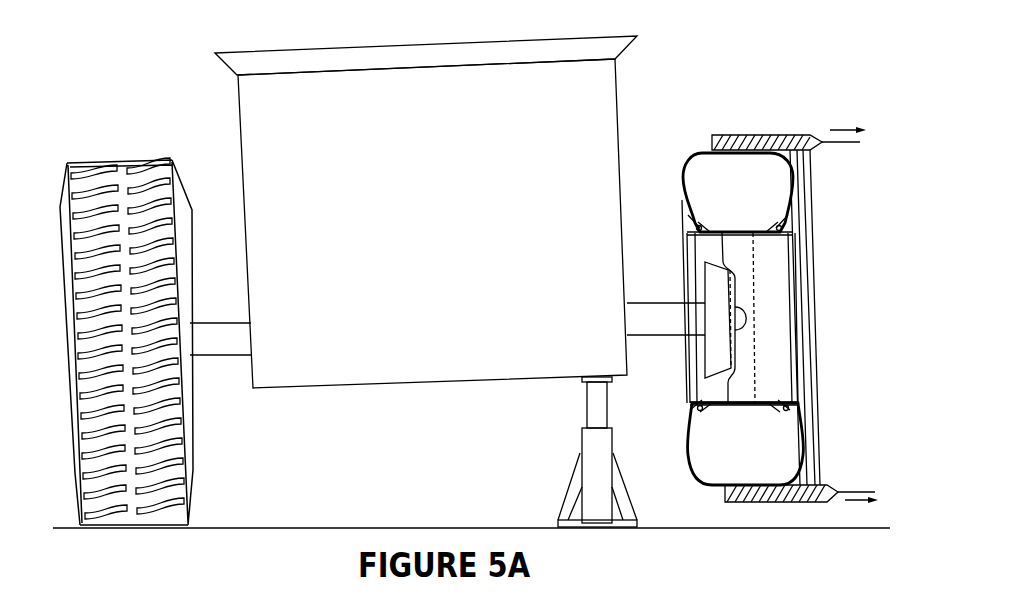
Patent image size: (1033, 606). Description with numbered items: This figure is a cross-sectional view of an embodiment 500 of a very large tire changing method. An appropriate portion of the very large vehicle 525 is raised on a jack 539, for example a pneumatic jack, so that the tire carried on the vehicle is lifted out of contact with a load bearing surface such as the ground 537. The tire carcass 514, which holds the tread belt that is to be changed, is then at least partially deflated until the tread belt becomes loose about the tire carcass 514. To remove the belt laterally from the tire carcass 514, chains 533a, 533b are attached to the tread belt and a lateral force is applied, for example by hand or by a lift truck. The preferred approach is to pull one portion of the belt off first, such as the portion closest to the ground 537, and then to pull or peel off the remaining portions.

The embodiment of the very large tire changing method 500 is at (689, 32).
The very large vehicle 525 is at (238, 108).
The tire carcass 514 is at (682, 173).
The chain 533a is at (830, 143).
The chain 533b is at (838, 490).
The ground 537 is at (345, 528).
The jack 539 is at (582, 438).